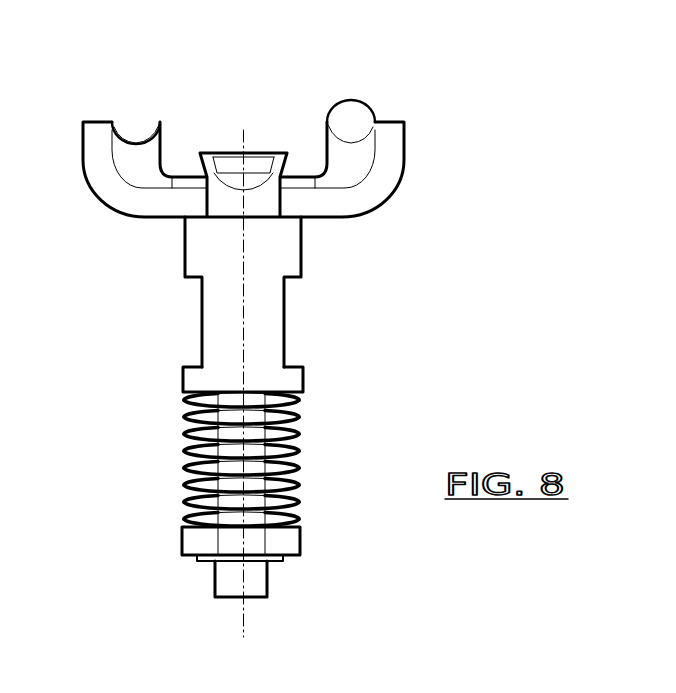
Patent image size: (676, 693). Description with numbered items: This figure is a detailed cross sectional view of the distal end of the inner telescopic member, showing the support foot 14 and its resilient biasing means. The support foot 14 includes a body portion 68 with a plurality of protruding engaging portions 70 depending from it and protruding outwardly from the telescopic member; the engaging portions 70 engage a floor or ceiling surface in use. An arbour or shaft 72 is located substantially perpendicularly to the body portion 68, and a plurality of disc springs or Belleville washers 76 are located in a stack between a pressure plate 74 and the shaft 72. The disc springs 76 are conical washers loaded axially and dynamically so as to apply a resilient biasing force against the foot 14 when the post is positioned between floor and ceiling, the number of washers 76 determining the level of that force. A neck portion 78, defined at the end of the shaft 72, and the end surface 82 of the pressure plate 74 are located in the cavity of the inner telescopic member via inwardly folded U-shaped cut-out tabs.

The support foot 14 is at (432, 190).
The body portion 68 is at (143, 207).
The engaging portions 70 is at (153, 120).
The shaft 72 is at (268, 328).
The neck portion 78 is at (302, 362).
The disc springs 76 is at (303, 448).
The end surface 82 is at (187, 562).
The pressure plate 74 is at (283, 548).